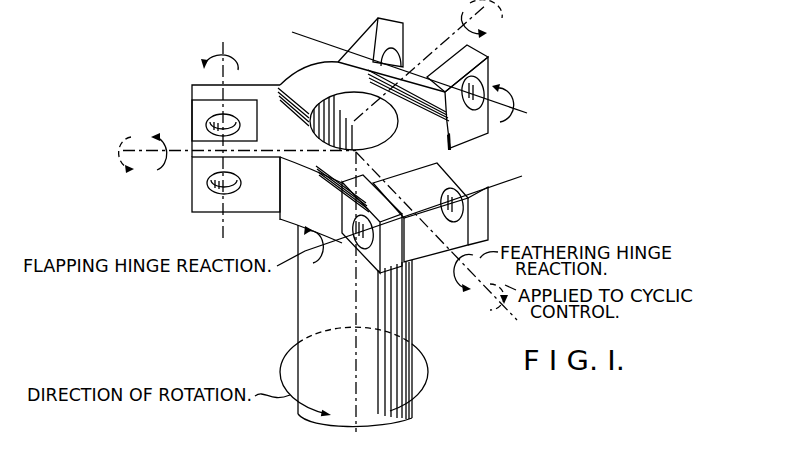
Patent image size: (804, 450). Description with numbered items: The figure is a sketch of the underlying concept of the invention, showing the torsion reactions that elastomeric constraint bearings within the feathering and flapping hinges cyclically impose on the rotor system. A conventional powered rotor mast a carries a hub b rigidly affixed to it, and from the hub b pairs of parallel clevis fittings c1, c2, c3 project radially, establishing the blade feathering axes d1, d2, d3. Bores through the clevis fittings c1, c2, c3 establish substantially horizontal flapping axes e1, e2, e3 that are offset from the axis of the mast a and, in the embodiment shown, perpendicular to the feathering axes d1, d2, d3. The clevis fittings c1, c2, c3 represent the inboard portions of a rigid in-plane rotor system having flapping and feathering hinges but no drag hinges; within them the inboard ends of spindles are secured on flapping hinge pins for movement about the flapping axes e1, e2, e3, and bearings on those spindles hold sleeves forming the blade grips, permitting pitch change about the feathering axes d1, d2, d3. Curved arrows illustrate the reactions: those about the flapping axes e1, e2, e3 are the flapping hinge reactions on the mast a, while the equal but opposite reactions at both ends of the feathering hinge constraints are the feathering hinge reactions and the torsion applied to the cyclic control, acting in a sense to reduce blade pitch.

The rotor mast a is at (312, 310).
The hub b is at (297, 203).
The clevis fitting c1 is at (372, 268).
The clevis fitting c2 is at (191, 207).
The clevis fitting c3 is at (376, 20).
The blade feathering axis d1 is at (507, 316).
The blade feathering axis d2 is at (182, 150).
The blade feathering axis d3 is at (452, 48).
The flapping axis e1 is at (520, 177).
The flapping axis e2 is at (222, 234).
The flapping axis e3 is at (409, 69).